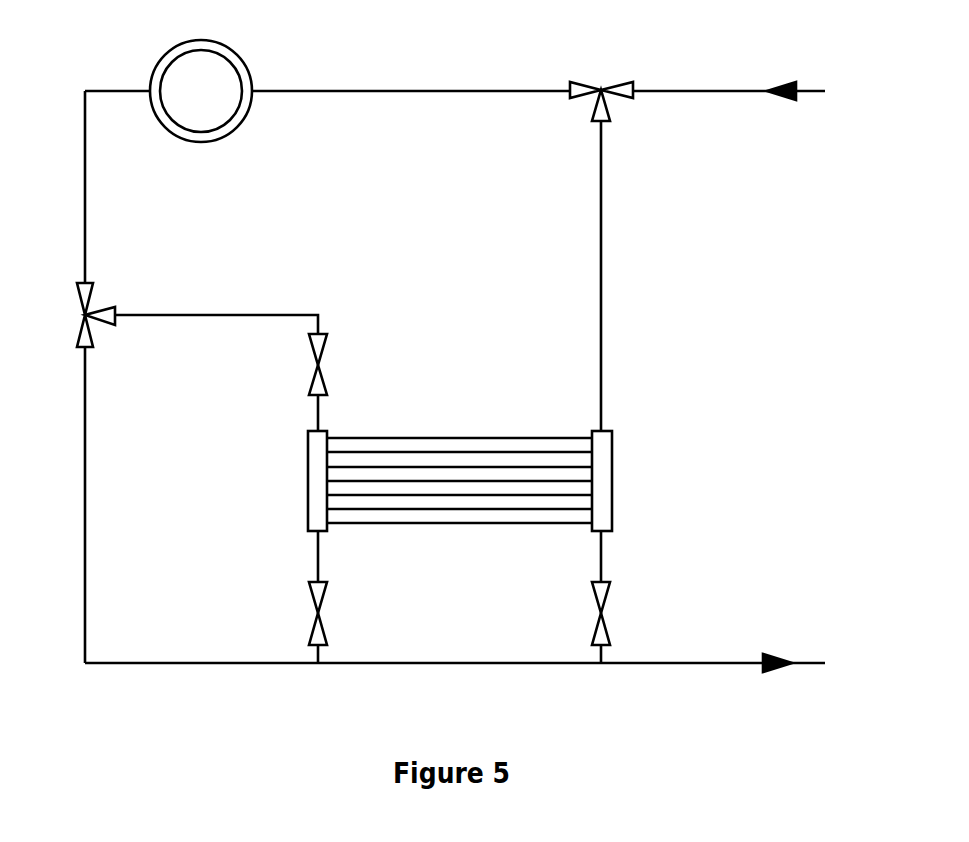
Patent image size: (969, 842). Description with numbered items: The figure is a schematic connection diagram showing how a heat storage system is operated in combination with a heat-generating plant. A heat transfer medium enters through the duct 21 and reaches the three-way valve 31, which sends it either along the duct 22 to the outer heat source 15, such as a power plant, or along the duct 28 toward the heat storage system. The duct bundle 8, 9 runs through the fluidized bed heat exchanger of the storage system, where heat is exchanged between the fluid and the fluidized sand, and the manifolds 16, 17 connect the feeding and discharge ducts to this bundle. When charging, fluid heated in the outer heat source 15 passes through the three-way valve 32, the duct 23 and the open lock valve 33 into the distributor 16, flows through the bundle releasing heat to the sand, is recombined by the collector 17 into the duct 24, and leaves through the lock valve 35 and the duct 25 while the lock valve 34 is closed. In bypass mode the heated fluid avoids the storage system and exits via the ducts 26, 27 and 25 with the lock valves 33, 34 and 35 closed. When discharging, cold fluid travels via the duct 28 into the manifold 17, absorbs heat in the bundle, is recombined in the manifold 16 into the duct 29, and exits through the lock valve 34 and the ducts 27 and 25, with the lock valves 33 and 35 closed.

The duct bundle 8 is at (459, 434).
The duct bundle 9 is at (462, 445).
The outer heat source 15 is at (215, 98).
The distributor 16 is at (602, 460).
The collector 17 is at (317, 483).
The duct 21 is at (708, 88).
The duct 22 is at (372, 91).
The duct 23 is at (217, 315).
The duct 24 is at (601, 551).
The duct 25 is at (725, 662).
The duct 26 is at (83, 622).
The duct 27 is at (418, 662).
The duct 28 is at (601, 233).
The duct 29 is at (318, 562).
The three-way valve 31 is at (582, 88).
The three-way valve 32 is at (87, 292).
The lock valve 33 is at (315, 345).
The lock valve 34 is at (315, 628).
The lock valve 35 is at (600, 628).